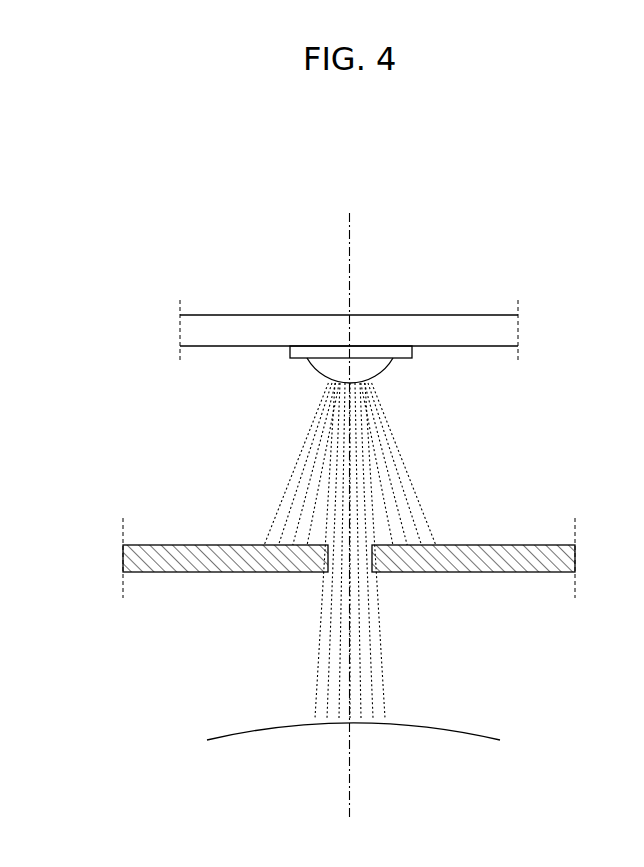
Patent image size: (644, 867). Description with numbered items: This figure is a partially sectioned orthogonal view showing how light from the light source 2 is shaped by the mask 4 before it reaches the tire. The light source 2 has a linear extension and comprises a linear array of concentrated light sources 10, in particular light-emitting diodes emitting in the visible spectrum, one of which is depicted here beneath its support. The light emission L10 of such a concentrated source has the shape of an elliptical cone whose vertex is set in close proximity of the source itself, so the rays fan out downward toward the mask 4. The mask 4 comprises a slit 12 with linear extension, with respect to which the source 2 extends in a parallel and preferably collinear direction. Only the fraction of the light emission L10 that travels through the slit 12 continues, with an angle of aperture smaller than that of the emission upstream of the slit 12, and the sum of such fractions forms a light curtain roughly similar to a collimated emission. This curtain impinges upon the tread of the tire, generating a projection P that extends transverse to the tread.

The light source 2 is at (343, 382).
The concentrated light source 10 is at (380, 366).
The light emission L10 is at (359, 550).
The mask 4 is at (349, 591).
The slit 12 is at (383, 565).
The projection P is at (378, 705).